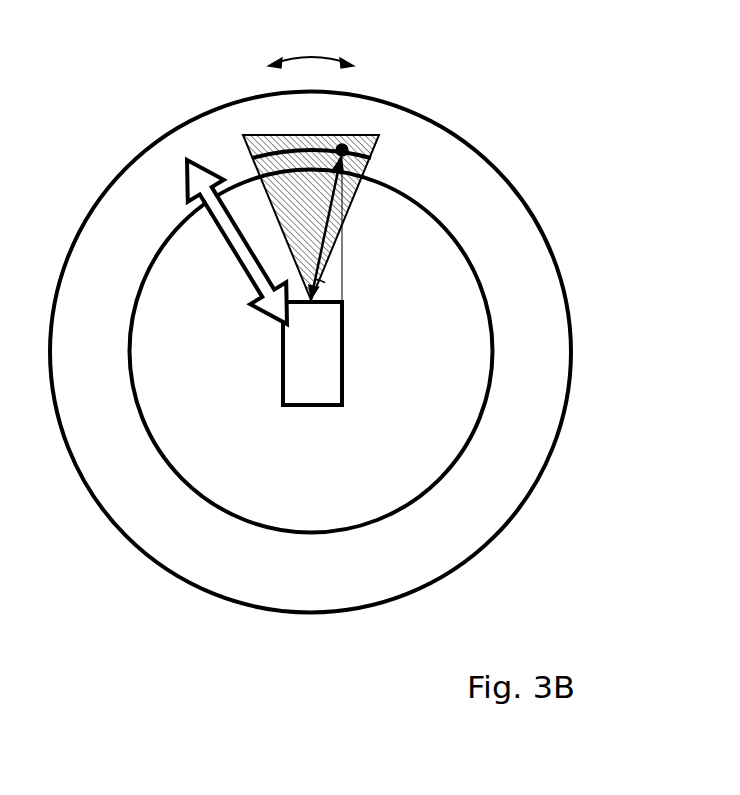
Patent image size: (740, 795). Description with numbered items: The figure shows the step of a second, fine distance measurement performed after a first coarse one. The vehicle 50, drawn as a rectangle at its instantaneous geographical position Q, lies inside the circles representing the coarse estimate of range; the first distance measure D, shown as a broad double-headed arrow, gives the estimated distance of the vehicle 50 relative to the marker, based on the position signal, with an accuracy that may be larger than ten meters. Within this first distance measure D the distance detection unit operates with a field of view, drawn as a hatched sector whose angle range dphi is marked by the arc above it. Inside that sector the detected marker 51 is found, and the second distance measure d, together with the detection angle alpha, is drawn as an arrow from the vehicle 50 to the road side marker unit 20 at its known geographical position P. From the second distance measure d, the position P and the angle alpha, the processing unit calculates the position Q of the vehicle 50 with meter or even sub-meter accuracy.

The detected marker 51 is at (316, 210).
The road side marker unit 20 is at (347, 145).
The vehicle 50 is at (378, 443).
The second distance measure d is at (390, 266).
The first distance measure D is at (217, 280).
The angle range of the field of view dphi is at (311, 47).